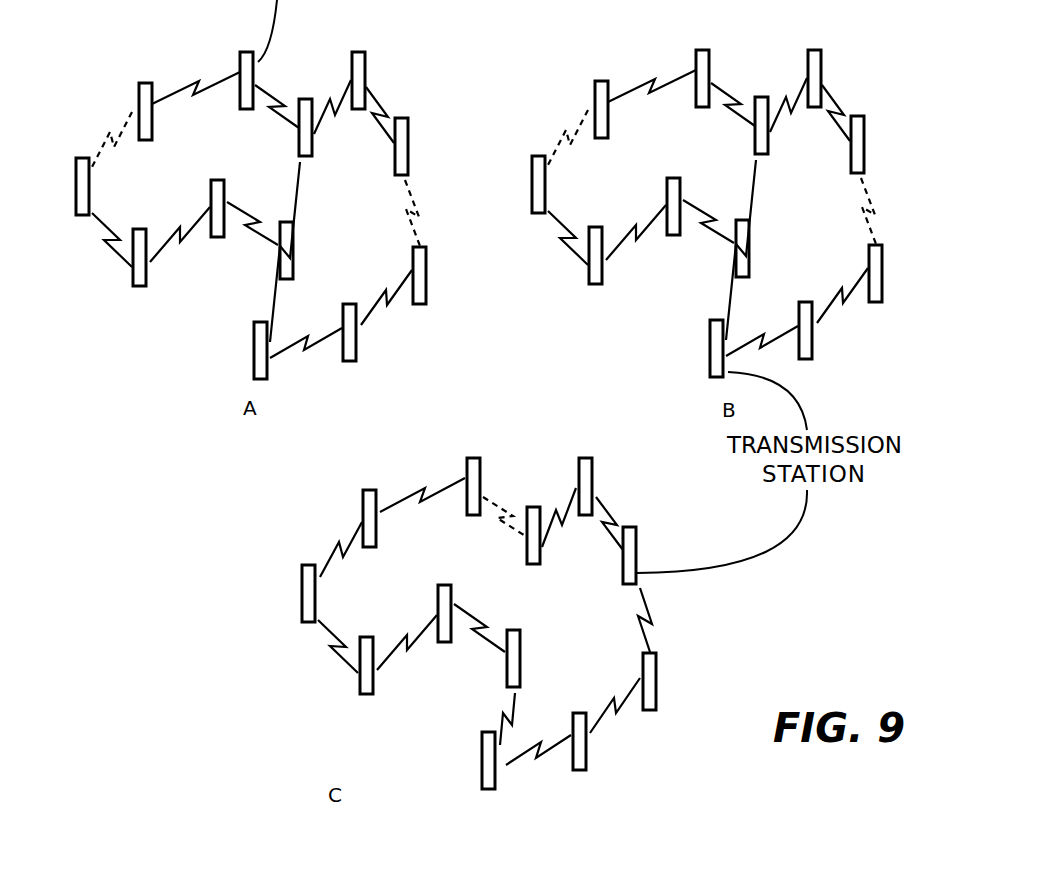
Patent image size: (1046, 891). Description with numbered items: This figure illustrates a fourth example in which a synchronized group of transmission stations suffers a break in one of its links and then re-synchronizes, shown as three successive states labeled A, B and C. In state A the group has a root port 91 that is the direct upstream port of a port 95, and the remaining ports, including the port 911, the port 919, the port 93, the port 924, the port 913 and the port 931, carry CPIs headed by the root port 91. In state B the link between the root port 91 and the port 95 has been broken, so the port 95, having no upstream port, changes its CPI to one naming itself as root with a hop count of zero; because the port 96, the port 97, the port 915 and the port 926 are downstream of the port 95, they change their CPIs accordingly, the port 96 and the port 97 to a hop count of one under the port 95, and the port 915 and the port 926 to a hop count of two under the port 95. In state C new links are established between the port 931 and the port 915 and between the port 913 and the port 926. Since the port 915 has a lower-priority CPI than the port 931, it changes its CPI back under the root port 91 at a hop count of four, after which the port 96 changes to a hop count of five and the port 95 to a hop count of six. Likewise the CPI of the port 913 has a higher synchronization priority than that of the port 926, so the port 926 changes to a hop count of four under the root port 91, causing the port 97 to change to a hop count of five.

The root port 91 is at (280, 258).
The port 93 is at (382, 358).
The port 95 is at (343, 157).
The port 96 is at (352, 65).
The port 97 is at (240, 62).
The port 911 is at (247, 168).
The port 913 is at (118, 192).
The port 915 is at (408, 142).
The port 919 is at (254, 346).
The port 924 is at (133, 277).
The port 926 is at (139, 100).
The port 931 is at (413, 262).